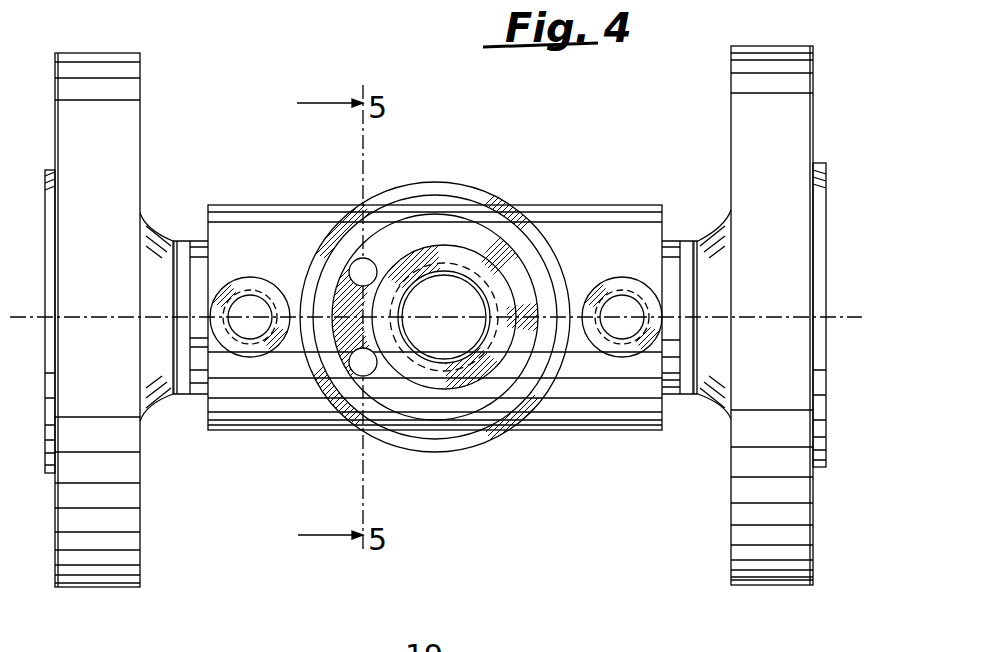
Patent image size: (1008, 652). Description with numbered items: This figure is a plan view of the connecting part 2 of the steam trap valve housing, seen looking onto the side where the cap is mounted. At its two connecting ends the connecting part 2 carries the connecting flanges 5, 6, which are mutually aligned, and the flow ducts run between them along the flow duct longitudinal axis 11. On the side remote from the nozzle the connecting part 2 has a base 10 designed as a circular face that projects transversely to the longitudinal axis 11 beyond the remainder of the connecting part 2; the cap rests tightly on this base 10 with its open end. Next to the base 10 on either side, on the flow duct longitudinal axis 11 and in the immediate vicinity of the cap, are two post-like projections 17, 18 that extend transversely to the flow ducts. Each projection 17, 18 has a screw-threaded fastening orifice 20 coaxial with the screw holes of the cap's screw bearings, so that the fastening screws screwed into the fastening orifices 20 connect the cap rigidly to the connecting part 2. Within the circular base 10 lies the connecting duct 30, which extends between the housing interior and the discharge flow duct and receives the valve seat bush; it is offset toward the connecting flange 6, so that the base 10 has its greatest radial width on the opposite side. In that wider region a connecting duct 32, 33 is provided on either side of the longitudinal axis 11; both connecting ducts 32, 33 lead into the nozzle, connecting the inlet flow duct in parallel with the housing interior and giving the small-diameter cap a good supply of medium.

The connecting part 2 is at (275, 440).
The connecting flange 5 is at (92, 540).
The connecting flange 6 is at (768, 550).
The base 10 is at (420, 185).
The longitudinal axis 11 is at (850, 317).
The projection 17 is at (245, 285).
The projection 18 is at (620, 290).
The fastening orifice 20 is at (245, 328).
The connecting duct 30 is at (452, 290).
The connecting duct 32 is at (373, 372).
The connecting duct 33 is at (345, 262).